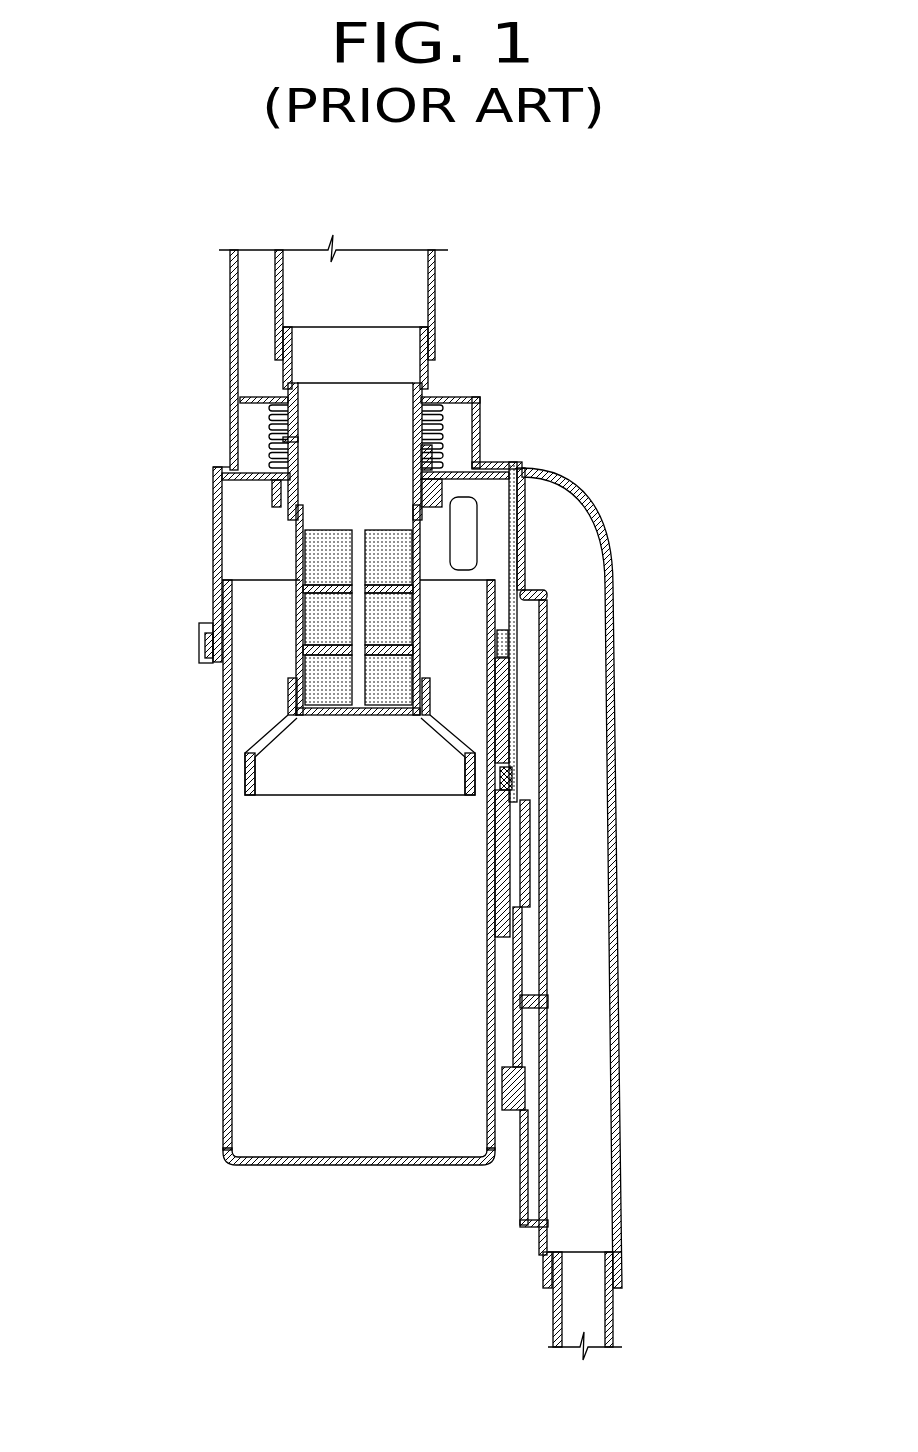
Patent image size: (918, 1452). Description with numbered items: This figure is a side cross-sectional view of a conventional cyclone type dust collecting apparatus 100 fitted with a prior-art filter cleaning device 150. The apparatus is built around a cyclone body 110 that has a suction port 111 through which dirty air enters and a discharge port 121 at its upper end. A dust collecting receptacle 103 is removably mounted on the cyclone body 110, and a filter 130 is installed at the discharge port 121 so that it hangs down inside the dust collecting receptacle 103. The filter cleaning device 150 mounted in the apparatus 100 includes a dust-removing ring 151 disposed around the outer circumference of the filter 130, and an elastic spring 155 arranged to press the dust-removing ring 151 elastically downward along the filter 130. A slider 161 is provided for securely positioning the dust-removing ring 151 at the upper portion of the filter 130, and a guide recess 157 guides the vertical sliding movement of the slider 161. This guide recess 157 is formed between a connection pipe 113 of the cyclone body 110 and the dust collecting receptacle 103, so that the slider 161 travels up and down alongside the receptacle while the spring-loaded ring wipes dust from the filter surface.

The cyclone type dust collecting apparatus 100 is at (186, 260).
The dust collecting receptacle 103 is at (223, 893).
The cyclone body 110 is at (212, 497).
The suction port 111 is at (460, 535).
The connection pipe 113 is at (612, 977).
The discharge port 121 is at (438, 330).
The filter 130 is at (300, 553).
The filter cleaning device 150 is at (240, 438).
The dust-removing ring 151 is at (447, 452).
The elastic spring 155 is at (440, 412).
The guide recess 157 is at (510, 855).
The slider 161 is at (520, 565).